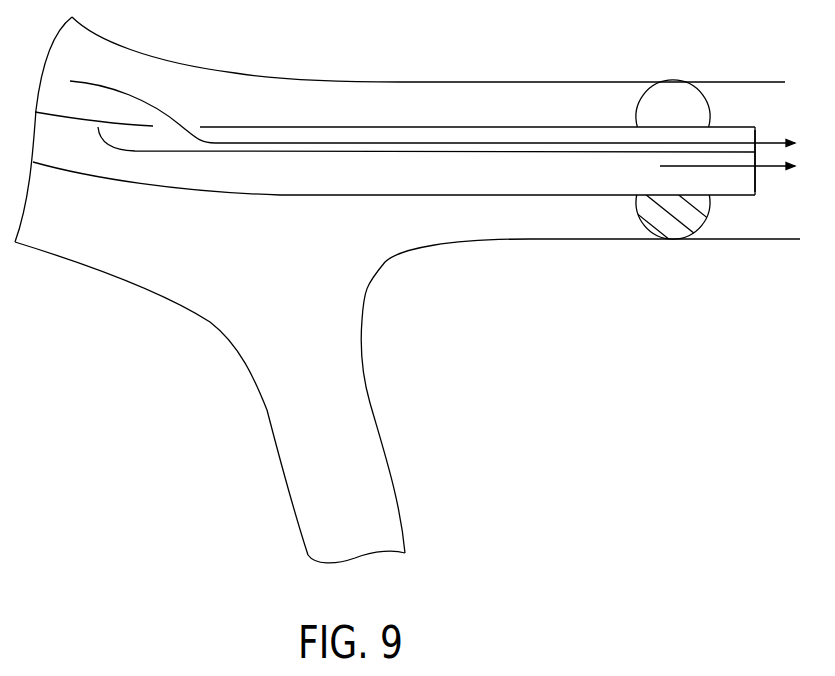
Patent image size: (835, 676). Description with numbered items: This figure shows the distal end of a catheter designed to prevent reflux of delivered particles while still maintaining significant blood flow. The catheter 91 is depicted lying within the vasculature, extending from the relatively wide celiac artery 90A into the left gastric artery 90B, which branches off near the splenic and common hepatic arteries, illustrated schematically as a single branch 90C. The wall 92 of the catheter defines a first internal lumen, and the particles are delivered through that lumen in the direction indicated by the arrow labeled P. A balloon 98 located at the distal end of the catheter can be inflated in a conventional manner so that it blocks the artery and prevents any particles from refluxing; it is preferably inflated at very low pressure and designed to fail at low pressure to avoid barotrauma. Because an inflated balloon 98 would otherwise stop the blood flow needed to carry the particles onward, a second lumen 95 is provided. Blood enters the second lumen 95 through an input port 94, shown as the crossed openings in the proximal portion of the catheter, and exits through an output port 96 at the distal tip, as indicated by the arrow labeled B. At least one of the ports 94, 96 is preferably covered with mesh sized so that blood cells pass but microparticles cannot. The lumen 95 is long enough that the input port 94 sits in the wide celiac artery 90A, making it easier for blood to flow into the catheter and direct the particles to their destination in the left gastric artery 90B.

The celiac artery 90A is at (52, 252).
The left gastric artery 90B is at (495, 82).
The splenic and common hepatic arteries 90C is at (385, 447).
The catheter 91 is at (277, 212).
The wall of the catheter 92 is at (481, 195).
The input port 94 is at (177, 108).
The second lumen 95 is at (407, 127).
The output port 96 is at (772, 124).
The balloon 98 is at (645, 100).
The blood flow arrow B is at (437, 112).
The particle delivery arrow P is at (739, 166).